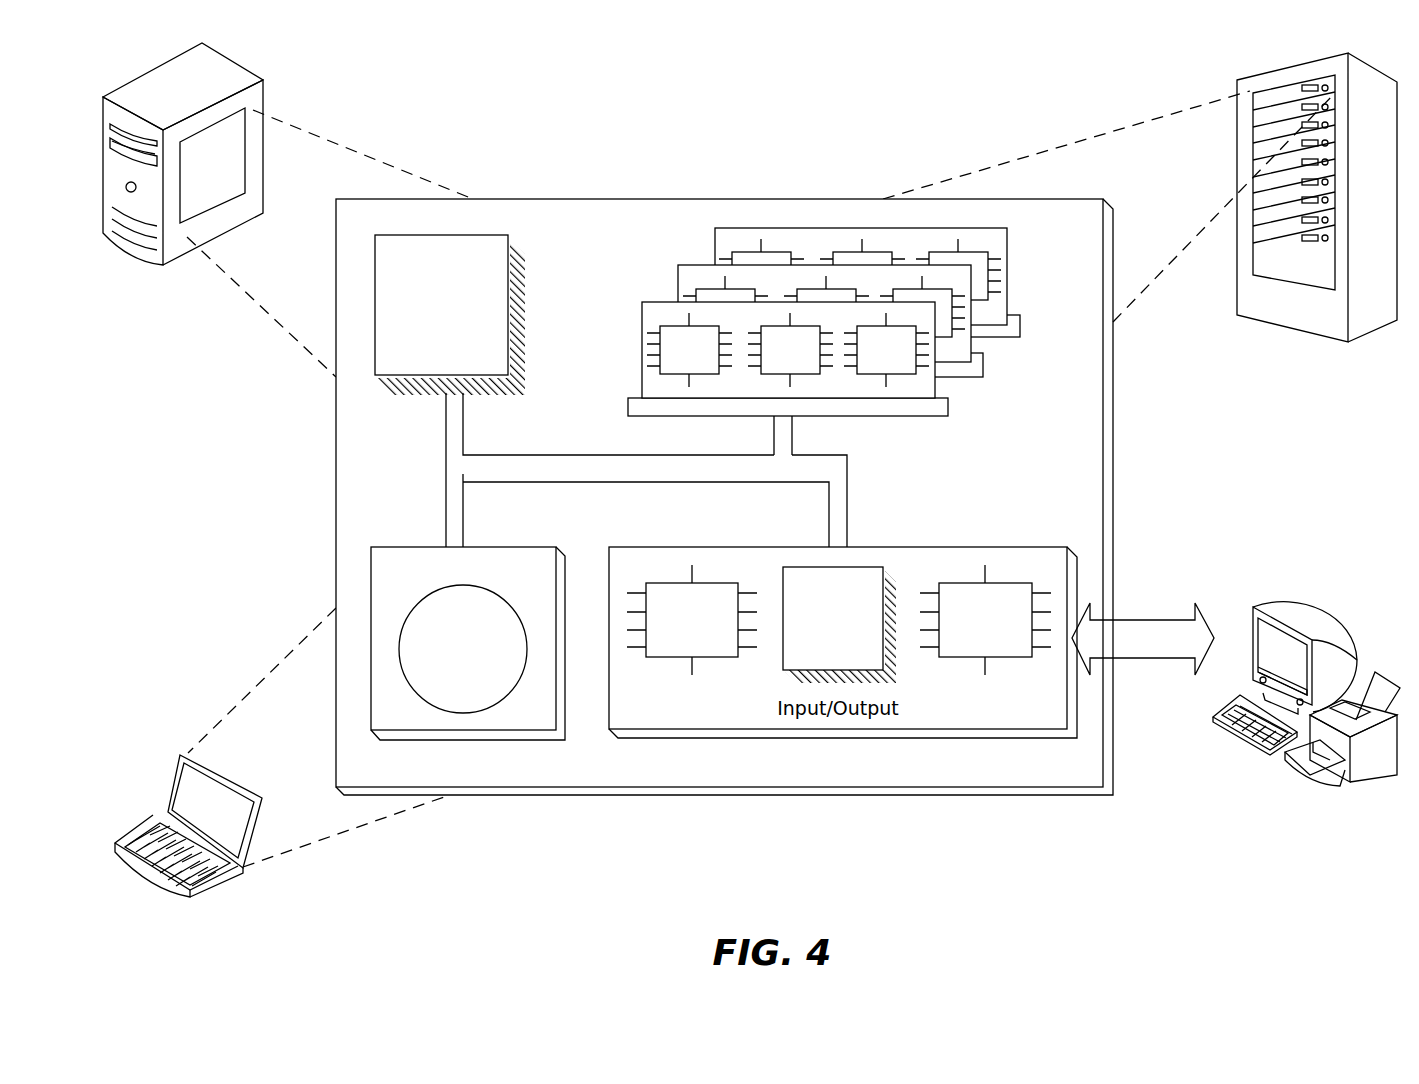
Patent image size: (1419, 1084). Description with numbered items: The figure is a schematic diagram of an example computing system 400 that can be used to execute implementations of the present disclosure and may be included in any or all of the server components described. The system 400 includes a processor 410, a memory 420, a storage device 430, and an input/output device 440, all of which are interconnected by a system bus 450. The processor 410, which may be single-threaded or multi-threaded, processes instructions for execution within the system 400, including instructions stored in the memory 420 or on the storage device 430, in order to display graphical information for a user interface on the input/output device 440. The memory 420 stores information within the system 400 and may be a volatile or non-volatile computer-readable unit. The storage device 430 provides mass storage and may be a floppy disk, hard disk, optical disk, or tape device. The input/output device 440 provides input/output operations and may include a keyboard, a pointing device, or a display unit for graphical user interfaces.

The computing system 400 is at (538, 114).
The processor 410 is at (450, 315).
The memory 420 is at (1012, 375).
The storage device 430 is at (468, 643).
The input/output device 440 is at (1237, 607).
The system bus 450 is at (642, 475).